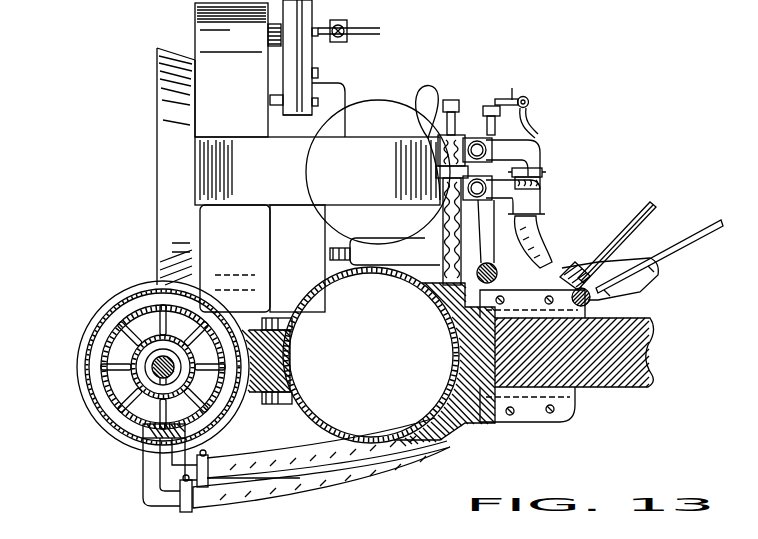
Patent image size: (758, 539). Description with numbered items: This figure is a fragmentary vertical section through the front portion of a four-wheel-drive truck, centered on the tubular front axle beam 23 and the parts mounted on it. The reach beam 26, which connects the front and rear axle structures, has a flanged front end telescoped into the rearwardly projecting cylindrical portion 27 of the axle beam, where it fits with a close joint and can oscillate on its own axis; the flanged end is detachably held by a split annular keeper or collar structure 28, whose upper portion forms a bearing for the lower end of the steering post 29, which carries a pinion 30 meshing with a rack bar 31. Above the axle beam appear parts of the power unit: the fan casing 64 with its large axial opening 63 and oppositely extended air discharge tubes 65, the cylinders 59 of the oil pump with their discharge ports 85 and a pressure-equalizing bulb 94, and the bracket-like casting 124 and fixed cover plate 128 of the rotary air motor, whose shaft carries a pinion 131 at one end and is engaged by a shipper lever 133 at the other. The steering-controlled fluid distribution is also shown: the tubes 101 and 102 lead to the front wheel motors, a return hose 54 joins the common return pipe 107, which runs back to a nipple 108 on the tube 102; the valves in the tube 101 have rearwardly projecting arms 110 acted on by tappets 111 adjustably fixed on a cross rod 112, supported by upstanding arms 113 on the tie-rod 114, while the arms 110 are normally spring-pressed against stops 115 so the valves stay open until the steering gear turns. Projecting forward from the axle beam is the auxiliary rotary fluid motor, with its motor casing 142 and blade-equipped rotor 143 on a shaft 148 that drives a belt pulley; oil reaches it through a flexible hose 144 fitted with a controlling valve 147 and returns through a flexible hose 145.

The tubular front axle beam 23 is at (312, 302).
The reach beam 26 is at (652, 359).
The rearwardly projecting cylindrical portion 27 is at (474, 403).
The split annular keeper or collar structure 28 is at (545, 412).
The steering post 29 is at (644, 206).
The pinion 30 is at (588, 288).
The rack bar 31 is at (600, 303).
The flexible high-pressure hose 54 is at (542, 175).
The cylinders 59 is at (325, 212).
The axial opening 63 is at (157, 146).
The fan casing 64 is at (195, 107).
The air discharge tubes 65 is at (270, 200).
The discharge ports 85 is at (380, 255).
The pressure-equalizing bulbs 94 is at (430, 92).
The tubes 101 is at (498, 152).
The tube 102 is at (525, 199).
The common return pipe 107 is at (542, 257).
The nipple 108 is at (542, 186).
The rearwardly projecting arms 110 is at (491, 105).
The tappets or projections 111 is at (520, 98).
The cross rod 112 is at (530, 103).
The upstanding arms 113 is at (536, 129).
The tie-rod 114 is at (497, 273).
The stops 115 is at (513, 88).
The supplemental bracket-like casting 124 is at (313, 84).
The fixed cover plate 128 is at (283, 72).
The pinion 131 is at (266, 31).
The shipper lever 133 is at (342, 28).
The motor casing 142 is at (224, 410).
The blade-equipped rotor 143 is at (112, 347).
The flexible pipe or hose 144 is at (442, 152).
The flexible pipe or hose 145 is at (442, 217).
The controlling valve 147 is at (440, 130).
The shaft 148 is at (158, 370).